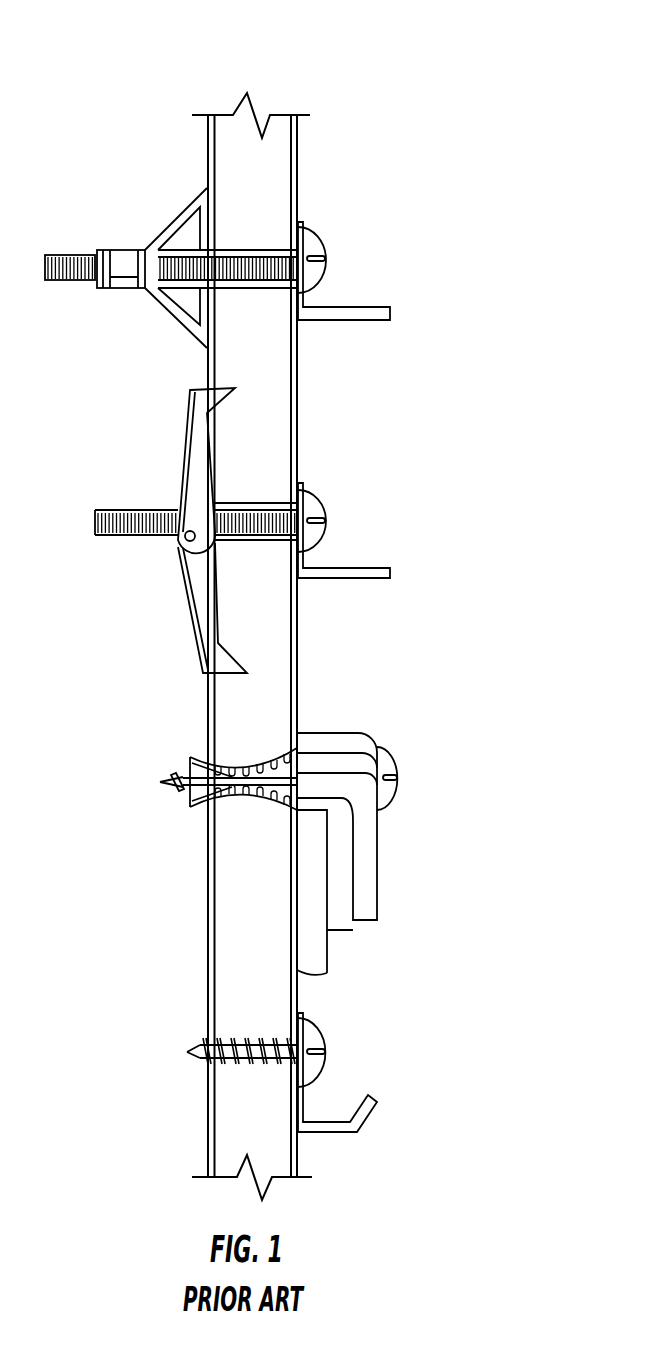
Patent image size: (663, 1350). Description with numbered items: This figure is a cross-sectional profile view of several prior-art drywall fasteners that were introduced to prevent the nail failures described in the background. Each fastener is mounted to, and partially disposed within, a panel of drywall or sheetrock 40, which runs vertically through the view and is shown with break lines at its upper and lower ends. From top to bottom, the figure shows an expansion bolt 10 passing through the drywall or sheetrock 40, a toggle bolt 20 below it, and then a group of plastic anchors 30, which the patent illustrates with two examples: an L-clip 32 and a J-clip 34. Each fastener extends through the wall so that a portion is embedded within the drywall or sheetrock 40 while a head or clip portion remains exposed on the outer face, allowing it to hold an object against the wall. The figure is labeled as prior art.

The drywall or sheetrock 40 is at (275, 90).
The expansion bolt 10 is at (337, 238).
The toggle bolt 20 is at (340, 510).
The plastic anchors 30 is at (150, 763).
The L-clip 32 is at (408, 785).
The J-clip 34 is at (358, 1057).